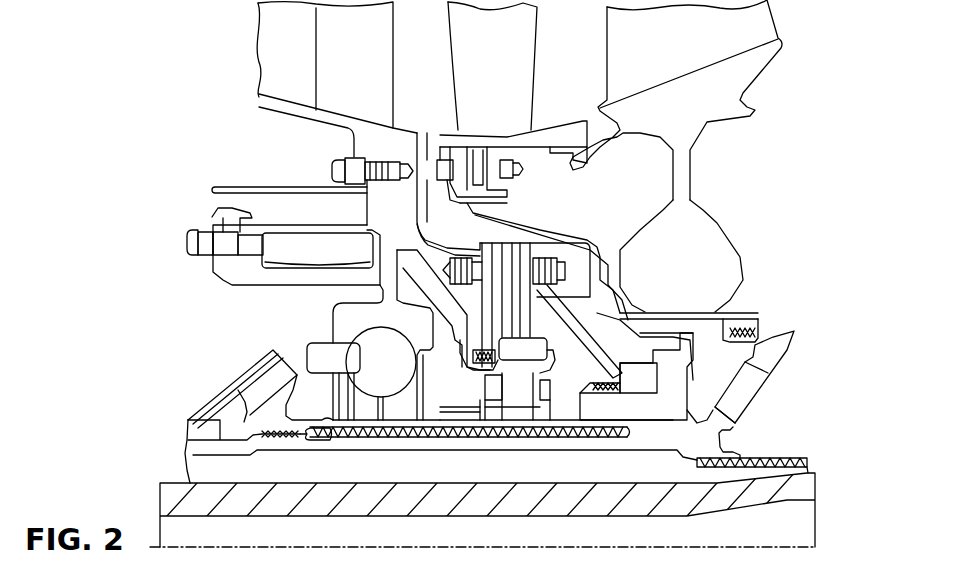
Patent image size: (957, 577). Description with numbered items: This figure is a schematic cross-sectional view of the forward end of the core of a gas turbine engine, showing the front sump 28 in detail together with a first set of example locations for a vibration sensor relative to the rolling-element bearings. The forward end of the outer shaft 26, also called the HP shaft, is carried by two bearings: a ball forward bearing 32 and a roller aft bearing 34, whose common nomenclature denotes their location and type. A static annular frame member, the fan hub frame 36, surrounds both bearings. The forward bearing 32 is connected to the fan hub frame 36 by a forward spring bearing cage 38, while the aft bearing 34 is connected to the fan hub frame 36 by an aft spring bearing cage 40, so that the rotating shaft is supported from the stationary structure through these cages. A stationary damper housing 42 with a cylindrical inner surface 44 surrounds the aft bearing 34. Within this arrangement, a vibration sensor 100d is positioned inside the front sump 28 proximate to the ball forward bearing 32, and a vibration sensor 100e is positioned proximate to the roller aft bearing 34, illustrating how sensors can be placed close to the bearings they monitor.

The outer shaft 26 is at (733, 430).
The front sump 28 is at (312, 79).
The ball forward bearing 32 is at (381, 373).
The roller aft bearing 34 is at (556, 396).
The fan hub frame 36 is at (399, 142).
The forward spring bearing cage 38 is at (296, 288).
The aft spring bearing cage 40 is at (430, 323).
The stationary damper housing 42 is at (520, 345).
The cylindrical inner surface 44 is at (538, 368).
The vibration sensor 100d is at (333, 381).
The vibration sensor 100e is at (598, 285).